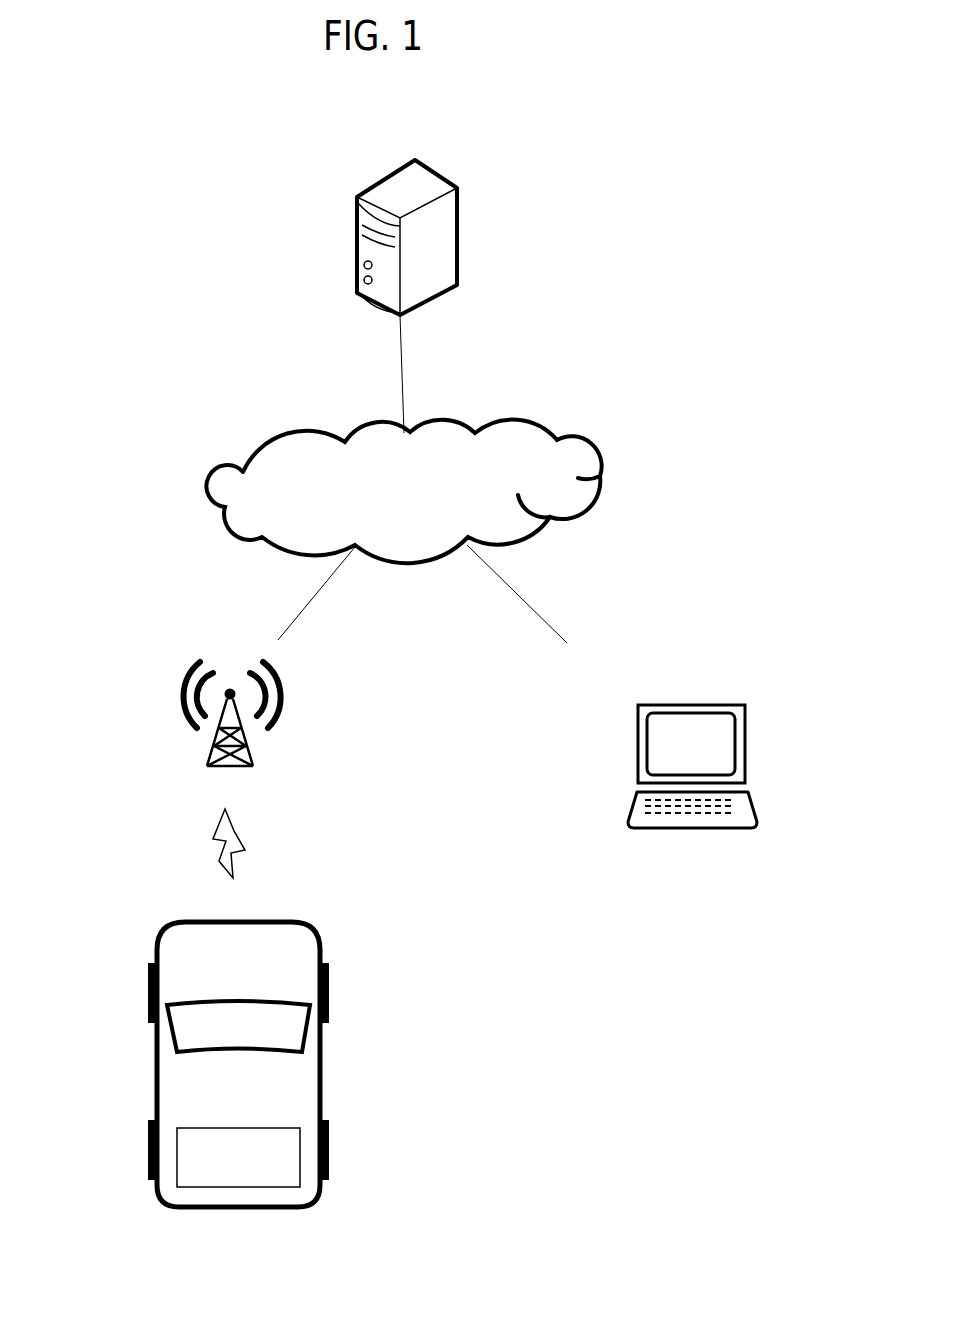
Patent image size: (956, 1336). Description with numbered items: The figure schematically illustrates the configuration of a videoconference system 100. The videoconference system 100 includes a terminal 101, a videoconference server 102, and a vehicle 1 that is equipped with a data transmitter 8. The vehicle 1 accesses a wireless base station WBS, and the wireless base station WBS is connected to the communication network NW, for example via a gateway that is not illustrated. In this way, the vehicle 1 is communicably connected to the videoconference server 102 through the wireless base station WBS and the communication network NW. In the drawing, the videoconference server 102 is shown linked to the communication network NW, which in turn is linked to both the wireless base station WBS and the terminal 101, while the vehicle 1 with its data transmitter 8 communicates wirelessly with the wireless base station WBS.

The videoconference system 100 is at (693, 204).
The videoconference server 102 is at (443, 178).
The terminal 101 is at (723, 702).
The communication network NW is at (600, 471).
The wireless base station WBS is at (207, 757).
The vehicle 1 is at (157, 953).
The data transmitter 8 is at (177, 1180).